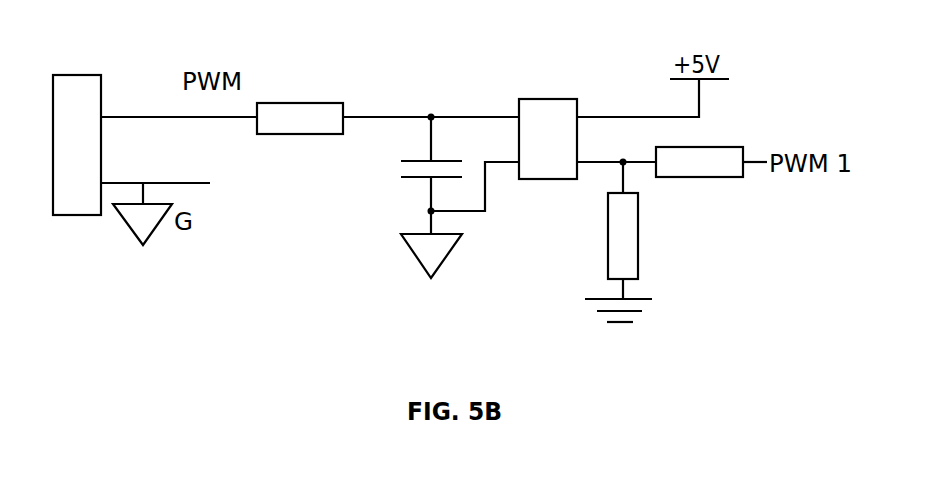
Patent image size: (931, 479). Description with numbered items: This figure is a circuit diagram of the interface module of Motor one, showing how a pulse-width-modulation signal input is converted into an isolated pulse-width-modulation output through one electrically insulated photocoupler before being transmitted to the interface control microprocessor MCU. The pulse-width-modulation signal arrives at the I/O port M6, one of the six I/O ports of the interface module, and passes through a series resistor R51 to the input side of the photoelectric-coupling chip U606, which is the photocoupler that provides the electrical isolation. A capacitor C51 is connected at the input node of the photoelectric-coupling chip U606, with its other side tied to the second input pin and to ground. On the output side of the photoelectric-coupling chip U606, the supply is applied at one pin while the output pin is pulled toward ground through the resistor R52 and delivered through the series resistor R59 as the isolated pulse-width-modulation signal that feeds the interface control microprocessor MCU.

The I/O port M6 is at (101, 145).
The resistor R51 is at (300, 106).
The capacitor C51 is at (416, 197).
The photoelectric-coupling chip U606 is at (548, 125).
The resistor R59 is at (699, 180).
The resistor R52 is at (596, 230).